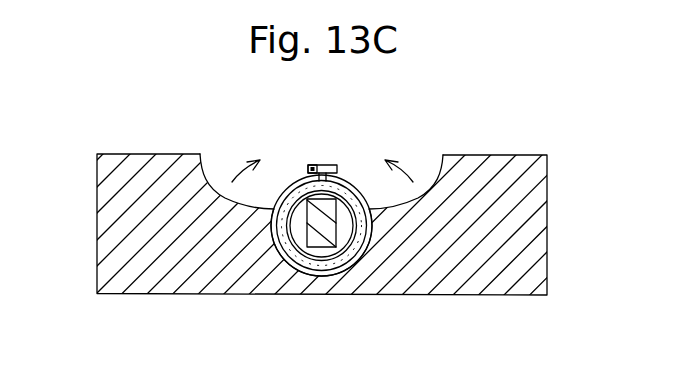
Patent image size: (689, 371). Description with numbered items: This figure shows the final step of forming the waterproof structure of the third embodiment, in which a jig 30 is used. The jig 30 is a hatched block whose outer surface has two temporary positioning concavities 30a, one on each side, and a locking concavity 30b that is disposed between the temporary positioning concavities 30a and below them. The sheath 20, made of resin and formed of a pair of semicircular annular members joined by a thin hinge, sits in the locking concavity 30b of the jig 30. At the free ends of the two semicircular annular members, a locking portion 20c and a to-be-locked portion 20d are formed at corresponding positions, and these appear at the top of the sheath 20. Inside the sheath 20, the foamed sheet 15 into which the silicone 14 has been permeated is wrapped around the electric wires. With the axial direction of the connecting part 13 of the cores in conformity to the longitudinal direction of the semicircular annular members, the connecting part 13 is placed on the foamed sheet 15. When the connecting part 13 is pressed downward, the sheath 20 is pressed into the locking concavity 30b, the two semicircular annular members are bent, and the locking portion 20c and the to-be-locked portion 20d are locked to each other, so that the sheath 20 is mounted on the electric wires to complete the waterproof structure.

The jig 30 is at (128, 168).
The temporary positioning concavity 30a is at (215, 184).
The locking concavity 30b is at (366, 238).
The sheath 20 is at (287, 184).
The locking portion 20c is at (331, 165).
The to-be-locked portion 20d is at (311, 165).
The connecting part 13 is at (317, 247).
The silicone 14 is at (284, 252).
The foamed sheet 15 is at (359, 255).